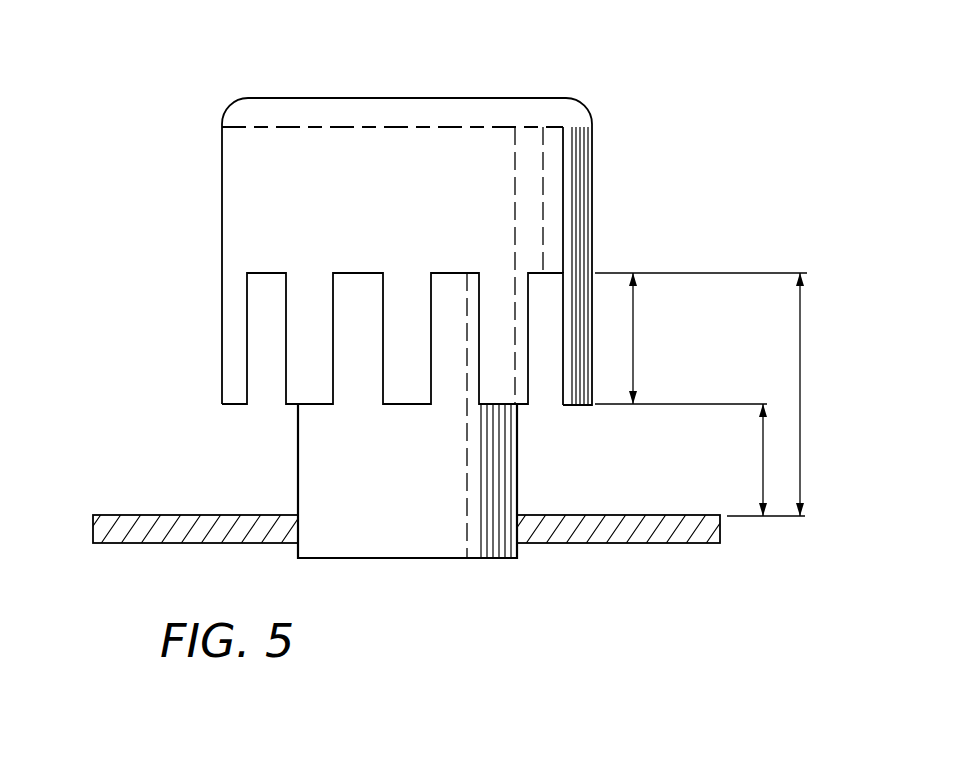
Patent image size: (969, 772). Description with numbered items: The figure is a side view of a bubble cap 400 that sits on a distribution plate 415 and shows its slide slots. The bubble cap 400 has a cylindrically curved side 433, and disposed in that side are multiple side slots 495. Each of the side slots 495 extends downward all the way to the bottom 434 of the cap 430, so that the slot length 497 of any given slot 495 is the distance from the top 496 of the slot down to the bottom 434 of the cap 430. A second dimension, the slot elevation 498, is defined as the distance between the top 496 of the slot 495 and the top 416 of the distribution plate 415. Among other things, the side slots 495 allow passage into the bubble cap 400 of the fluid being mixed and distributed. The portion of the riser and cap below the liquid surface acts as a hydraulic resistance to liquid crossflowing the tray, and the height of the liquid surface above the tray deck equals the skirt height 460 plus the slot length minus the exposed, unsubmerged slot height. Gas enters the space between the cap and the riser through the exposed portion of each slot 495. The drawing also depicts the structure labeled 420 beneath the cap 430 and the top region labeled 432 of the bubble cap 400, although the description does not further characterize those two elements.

The bubble cap 400 is at (185, 89).
The distribution plate 415 is at (628, 545).
The top of the distribution plate 416 is at (103, 515).
The post 420 is at (517, 440).
The cap 430 is at (222, 190).
The top wall of cap 432 is at (438, 98).
The cylindrically curved side 433 is at (590, 167).
The bottom of the cap 434 is at (578, 407).
The skirt height 460 is at (762, 462).
The side slots 495 is at (352, 350).
The top of the slot 496 is at (546, 274).
The slot length 497 is at (635, 318).
The slot elevation 498 is at (797, 363).